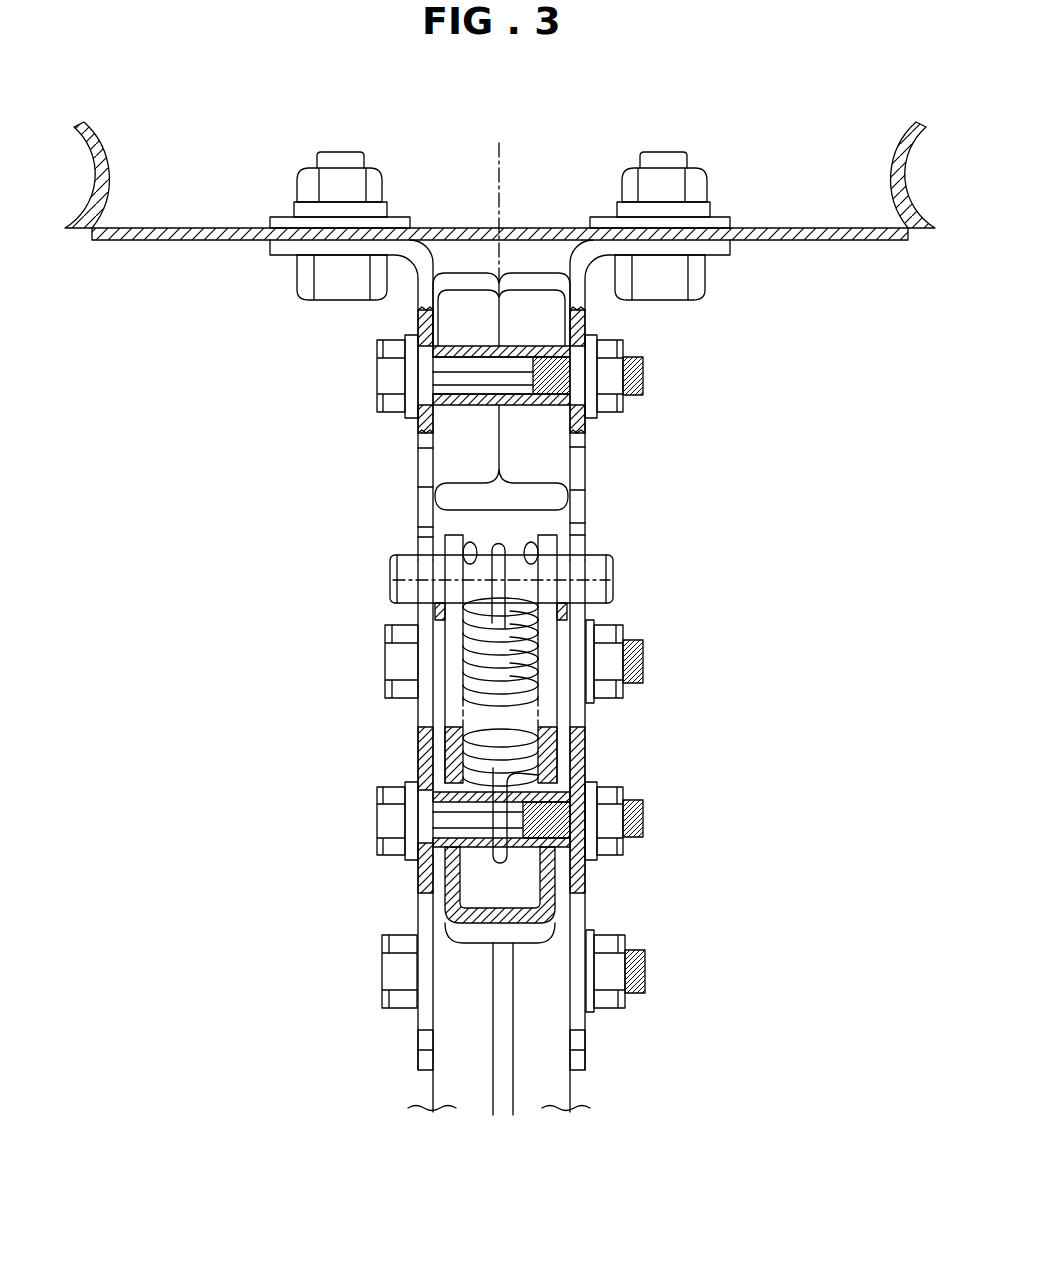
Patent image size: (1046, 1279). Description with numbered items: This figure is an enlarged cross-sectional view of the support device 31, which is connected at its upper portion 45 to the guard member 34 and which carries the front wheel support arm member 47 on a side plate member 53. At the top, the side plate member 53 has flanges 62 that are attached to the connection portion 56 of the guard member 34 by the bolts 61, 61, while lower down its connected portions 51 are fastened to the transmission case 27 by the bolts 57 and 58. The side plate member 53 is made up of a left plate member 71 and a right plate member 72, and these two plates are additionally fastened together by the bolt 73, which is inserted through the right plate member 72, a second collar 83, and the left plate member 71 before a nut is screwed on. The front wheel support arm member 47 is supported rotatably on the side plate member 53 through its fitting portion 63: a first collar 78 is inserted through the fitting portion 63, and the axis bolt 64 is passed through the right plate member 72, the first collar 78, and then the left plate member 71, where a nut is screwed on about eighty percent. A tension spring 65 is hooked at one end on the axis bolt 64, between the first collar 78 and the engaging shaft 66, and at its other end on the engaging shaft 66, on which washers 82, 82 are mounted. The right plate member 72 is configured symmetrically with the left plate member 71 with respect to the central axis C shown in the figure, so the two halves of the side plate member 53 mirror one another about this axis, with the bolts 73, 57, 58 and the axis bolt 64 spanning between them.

The transmission case 27 is at (472, 1100).
The support device 31 is at (186, 403).
The guard member 34 is at (786, 158).
The upper portion 45 is at (418, 300).
The front wheel support arm member 47 is at (632, 530).
The connected portions 51 is at (418, 907).
The side plate member 53 is at (257, 455).
The connection portion 56 is at (545, 228).
The bolt 57 is at (384, 663).
The bolt 58 is at (382, 970).
The bolts 61 is at (320, 302).
The flanges 62 is at (278, 258).
The fitting portion 63 is at (557, 713).
The axis bolt 64 is at (377, 818).
The tension spring 65 is at (527, 640).
The engaging shaft 66 is at (615, 578).
The left plate member 71 is at (420, 497).
The right plate member 72 is at (418, 518).
The bolt 73 is at (377, 383).
The first collar 78 is at (517, 853).
The washers 82 is at (416, 538).
The second collar 83 is at (530, 410).
The central axis C is at (499, 158).